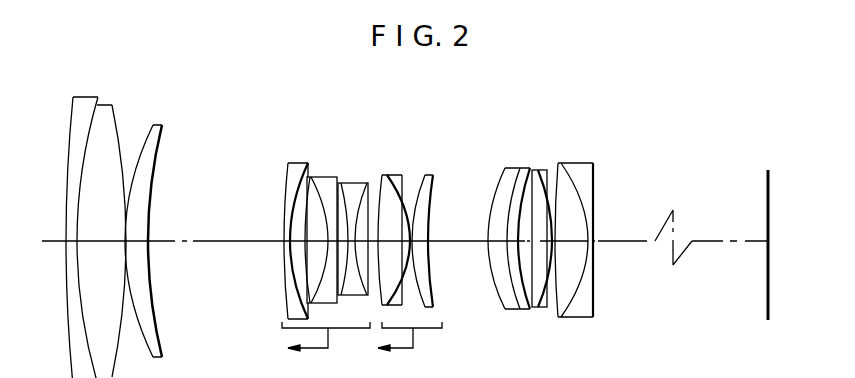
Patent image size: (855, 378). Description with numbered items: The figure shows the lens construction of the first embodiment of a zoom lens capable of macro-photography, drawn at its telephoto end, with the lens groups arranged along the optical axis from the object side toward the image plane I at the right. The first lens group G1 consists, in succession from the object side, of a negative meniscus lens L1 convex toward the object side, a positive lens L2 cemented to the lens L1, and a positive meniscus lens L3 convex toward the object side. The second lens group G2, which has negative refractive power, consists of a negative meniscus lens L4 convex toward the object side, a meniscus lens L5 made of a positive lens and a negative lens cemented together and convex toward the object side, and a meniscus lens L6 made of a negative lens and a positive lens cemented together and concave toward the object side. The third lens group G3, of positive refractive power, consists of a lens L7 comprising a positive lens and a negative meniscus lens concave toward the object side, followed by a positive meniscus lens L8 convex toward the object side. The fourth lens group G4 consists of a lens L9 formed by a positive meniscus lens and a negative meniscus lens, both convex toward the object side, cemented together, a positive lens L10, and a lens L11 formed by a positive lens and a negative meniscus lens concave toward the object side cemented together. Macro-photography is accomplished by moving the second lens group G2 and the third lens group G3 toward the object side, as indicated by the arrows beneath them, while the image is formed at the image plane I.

The first lens group G1 is at (38, 59).
The second lens group G2 is at (270, 126).
The third lens group G3 is at (463, 126).
The fourth lens group G4 is at (615, 126).
The negative meniscus lens L1 is at (83, 97).
The positive lens L2 is at (105, 103).
The positive meniscus lens L3 is at (152, 125).
The negative meniscus lens L4 is at (295, 163).
The meniscus lens L5 is at (333, 170).
The meniscus lens L6 is at (370, 170).
The lens L7 is at (378, 170).
The positive meniscus lens L8 is at (427, 173).
The lens L9 is at (543, 160).
The positive lens L10 is at (545, 168).
The lens L11 is at (558, 160).
The image plane I is at (771, 176).